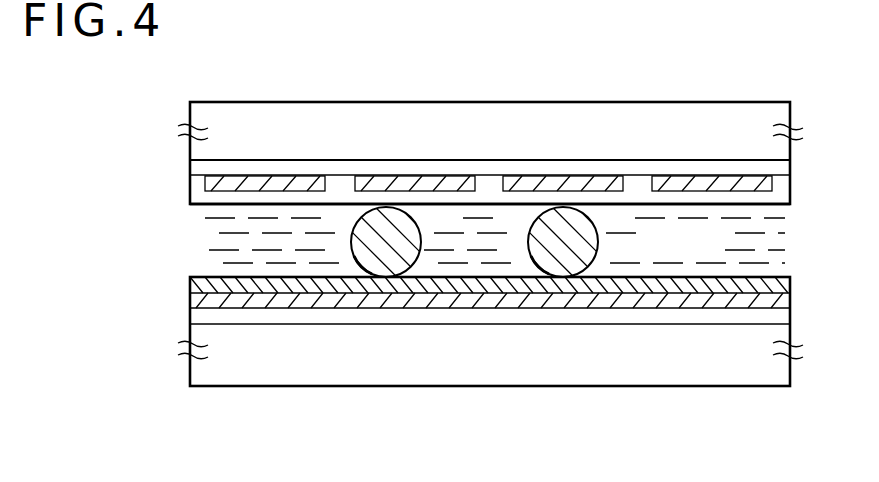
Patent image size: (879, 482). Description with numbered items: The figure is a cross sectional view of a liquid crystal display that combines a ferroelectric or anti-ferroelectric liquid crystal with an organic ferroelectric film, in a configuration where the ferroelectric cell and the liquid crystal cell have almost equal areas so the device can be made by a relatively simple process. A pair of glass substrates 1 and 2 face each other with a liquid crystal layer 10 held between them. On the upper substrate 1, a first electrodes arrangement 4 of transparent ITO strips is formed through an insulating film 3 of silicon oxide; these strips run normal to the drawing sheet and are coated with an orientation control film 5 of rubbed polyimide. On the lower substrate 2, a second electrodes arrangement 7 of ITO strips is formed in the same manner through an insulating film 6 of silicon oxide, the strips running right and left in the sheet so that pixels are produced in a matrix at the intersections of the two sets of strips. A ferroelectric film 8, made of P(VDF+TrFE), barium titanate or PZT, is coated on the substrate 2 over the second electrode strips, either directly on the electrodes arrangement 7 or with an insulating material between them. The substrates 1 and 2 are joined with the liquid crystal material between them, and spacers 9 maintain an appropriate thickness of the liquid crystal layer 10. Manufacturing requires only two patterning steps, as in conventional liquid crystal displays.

The glass substrate 1 is at (422, 108).
The glass substrate 2 is at (418, 372).
The insulating film 3 is at (598, 160).
The first electrodes arrangement 4 is at (262, 185).
The orientation control film 5 is at (780, 204).
The insulating film 6 is at (622, 318).
The second electrodes arrangement 7 is at (495, 303).
The ferroelectric film 8 is at (252, 290).
The spacers 9 is at (402, 222).
The liquid crystal layer 10 is at (495, 240).